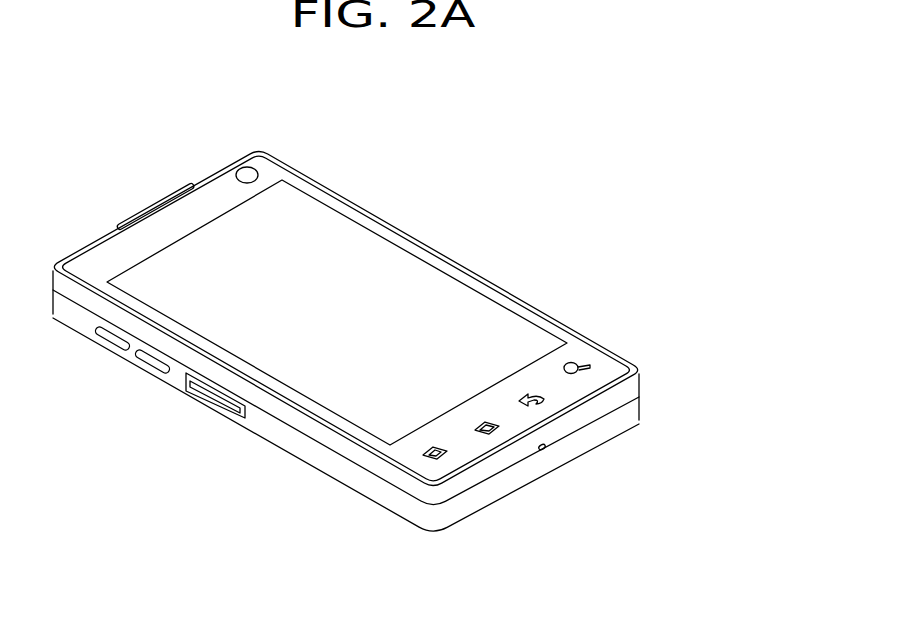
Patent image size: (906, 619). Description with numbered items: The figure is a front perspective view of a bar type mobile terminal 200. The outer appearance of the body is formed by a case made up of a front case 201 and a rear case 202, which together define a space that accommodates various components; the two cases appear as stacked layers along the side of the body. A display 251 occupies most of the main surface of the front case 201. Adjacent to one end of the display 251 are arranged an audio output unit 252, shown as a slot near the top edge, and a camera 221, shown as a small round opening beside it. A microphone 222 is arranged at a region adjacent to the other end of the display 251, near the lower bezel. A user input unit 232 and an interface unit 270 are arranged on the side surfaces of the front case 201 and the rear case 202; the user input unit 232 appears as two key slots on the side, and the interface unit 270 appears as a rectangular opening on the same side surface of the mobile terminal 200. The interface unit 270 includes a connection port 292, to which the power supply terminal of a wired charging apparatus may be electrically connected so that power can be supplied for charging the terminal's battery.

The mobile terminal 200 is at (384, 308).
The front case 201 is at (632, 385).
The rear case 202 is at (633, 410).
The camera 221 is at (242, 168).
The microphone 222 is at (544, 451).
The user input unit 232 is at (155, 362).
The display 251 is at (343, 243).
The audio output unit 252 is at (152, 215).
The interface unit 270 is at (180, 440).
The connection port 292 is at (232, 408).